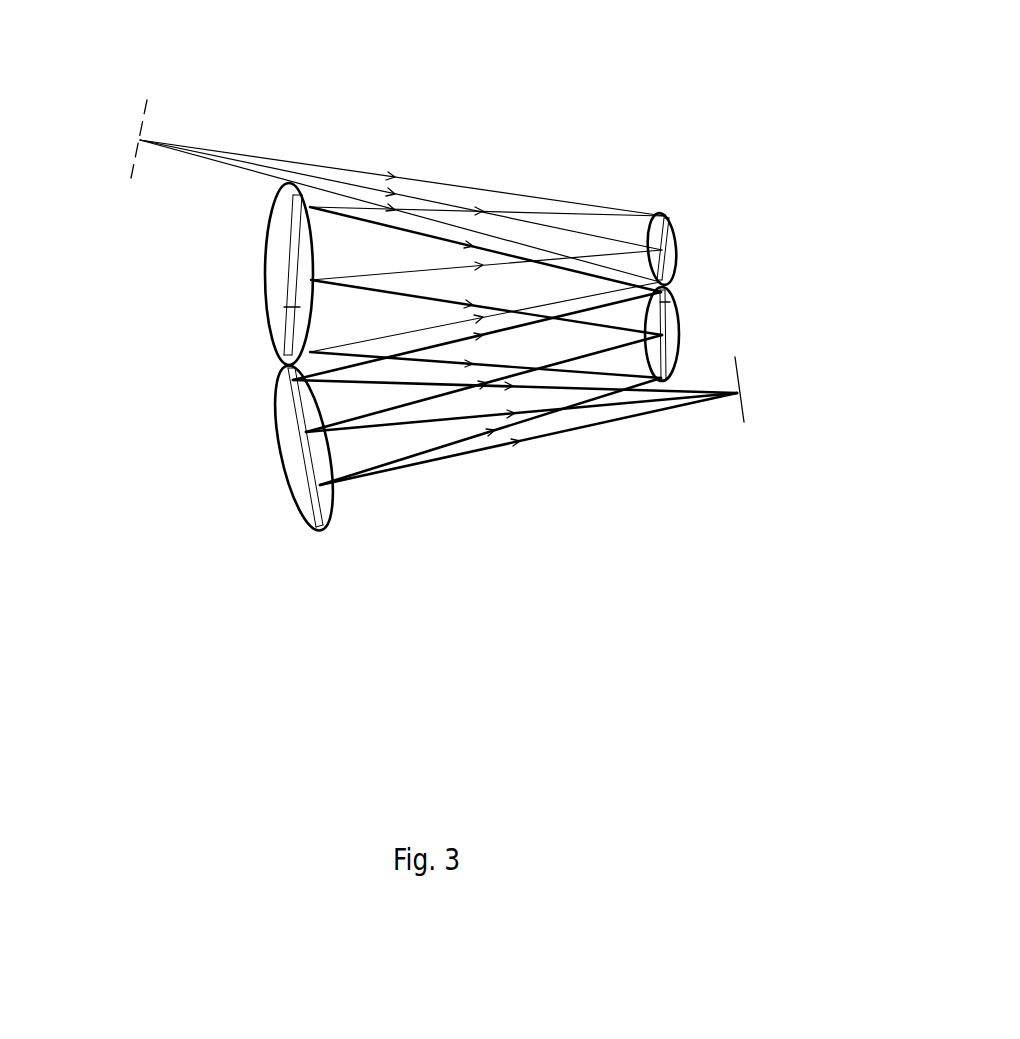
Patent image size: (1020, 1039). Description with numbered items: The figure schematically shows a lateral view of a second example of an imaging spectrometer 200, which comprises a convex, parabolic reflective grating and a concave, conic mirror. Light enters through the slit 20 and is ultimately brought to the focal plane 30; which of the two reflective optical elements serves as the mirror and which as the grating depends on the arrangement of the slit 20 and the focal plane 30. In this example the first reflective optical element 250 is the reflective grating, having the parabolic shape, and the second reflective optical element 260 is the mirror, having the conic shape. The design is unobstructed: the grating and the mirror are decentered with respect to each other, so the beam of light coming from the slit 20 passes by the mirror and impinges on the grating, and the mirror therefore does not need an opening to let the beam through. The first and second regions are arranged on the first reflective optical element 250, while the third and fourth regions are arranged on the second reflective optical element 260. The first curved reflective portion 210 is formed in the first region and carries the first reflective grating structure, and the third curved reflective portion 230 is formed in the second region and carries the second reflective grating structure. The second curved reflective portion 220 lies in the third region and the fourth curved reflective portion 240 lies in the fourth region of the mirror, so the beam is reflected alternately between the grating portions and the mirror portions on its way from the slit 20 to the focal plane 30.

The slit 20 is at (140, 137).
The focal plane 30 is at (738, 393).
The imaging spectrometer 200 is at (568, 182).
The first curved reflective portion 210 is at (672, 252).
The second curved reflective portion 220 is at (264, 272).
The third curved reflective portion 230 is at (682, 340).
The fourth curved reflective portion 240 is at (277, 452).
The first reflective optical element 250 is at (666, 213).
The second reflective optical element 260 is at (322, 532).